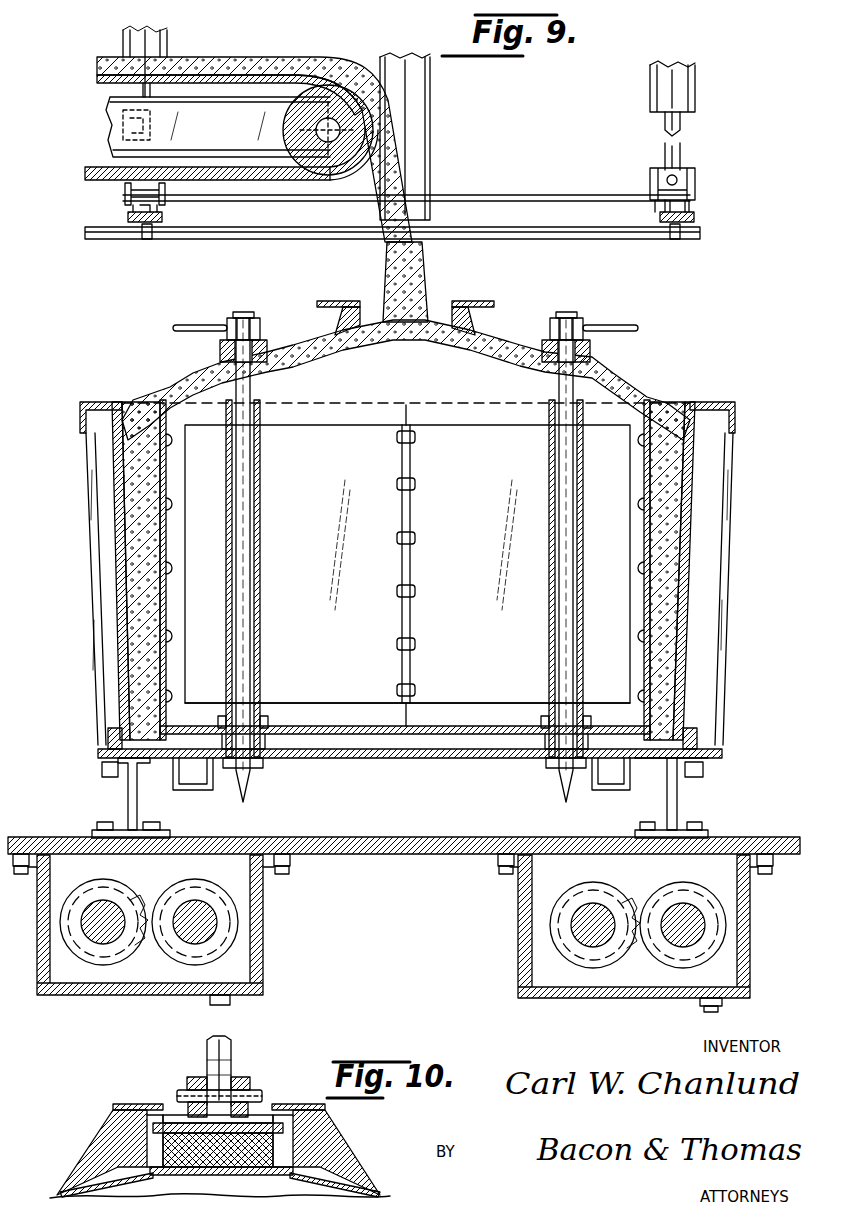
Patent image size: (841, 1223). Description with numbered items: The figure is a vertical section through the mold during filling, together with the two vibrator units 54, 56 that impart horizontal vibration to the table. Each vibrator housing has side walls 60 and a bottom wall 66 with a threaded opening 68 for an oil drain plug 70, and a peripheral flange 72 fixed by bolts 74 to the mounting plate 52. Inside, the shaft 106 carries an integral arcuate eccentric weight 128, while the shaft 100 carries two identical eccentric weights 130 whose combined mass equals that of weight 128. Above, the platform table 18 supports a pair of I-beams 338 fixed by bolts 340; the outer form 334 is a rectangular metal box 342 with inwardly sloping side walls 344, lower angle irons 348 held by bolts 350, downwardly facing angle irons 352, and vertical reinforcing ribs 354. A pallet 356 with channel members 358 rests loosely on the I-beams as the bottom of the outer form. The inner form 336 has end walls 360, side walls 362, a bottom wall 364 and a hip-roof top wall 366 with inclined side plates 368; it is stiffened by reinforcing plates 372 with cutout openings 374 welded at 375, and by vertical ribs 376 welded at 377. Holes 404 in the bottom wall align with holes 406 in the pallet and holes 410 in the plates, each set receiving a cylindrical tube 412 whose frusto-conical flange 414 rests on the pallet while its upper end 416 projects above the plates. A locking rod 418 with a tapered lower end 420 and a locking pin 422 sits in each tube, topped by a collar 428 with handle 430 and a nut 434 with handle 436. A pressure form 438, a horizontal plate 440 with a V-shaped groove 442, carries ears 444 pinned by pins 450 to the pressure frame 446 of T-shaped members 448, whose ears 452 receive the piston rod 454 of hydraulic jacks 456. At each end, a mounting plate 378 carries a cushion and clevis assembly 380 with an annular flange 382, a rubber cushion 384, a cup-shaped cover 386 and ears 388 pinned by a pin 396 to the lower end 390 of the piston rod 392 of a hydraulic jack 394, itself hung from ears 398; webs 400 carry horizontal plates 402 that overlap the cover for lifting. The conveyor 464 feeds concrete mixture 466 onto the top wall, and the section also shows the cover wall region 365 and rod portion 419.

In FIG. 9, the platform table 18 is at (370, 834).
In FIG. 9, the mounting plate 52 is at (420, 858).
In FIG. 9, the vibrator unit 54 is at (280, 944).
In FIG. 9, the vibrator unit 56 is at (506, 946).
In FIG. 9, the side walls 60 is at (520, 962).
In FIG. 9, the bottom wall 66 is at (578, 998).
In FIG. 9, the threaded opening 68 is at (698, 986).
In FIG. 9, the oil drain plug 70 is at (718, 1010).
In FIG. 9, the peripheral flange 72 is at (492, 864).
In FIG. 9, the bolts 74 is at (506, 872).
In FIG. 9, the shaft 100 is at (580, 942).
In FIG. 9, the shaft 106 is at (664, 947).
In FIG. 9, the eccentric weight 128 is at (700, 895).
In FIG. 9, the eccentric weights 130 is at (614, 895).
In FIG. 9, the outer form 334 is at (745, 610).
In FIG. 9, the inner form 336 is at (179, 369).
In FIG. 9, the I-beams 338 is at (140, 802).
In FIG. 9, the bolts 340 is at (106, 826).
In FIG. 9, the rectangular metal box 342 is at (705, 482).
In FIG. 9, the side walls 344 is at (120, 600).
In FIG. 9, the angle irons 348 is at (118, 729).
In FIG. 9, the bolts 350 is at (704, 772).
In FIG. 9, the downwardly facing angle irons 352 is at (735, 414).
In FIG. 9, the reinforcing ribs 354 is at (710, 580).
In FIG. 9, the pallet 356 is at (326, 760).
In FIG. 9, the reinforcing channel members 358 is at (216, 792).
In FIG. 9, the end walls 360 is at (478, 440).
In FIG. 9, the side walls 362 is at (168, 505).
In FIG. 9, the bottom wall 364 is at (448, 726).
In FIG. 9, the cover wall 365 is at (615, 380).
In FIG. 10, the top wall 366 is at (388, 1183).
In FIG. 9, the inclined side plates 368 is at (305, 368).
In FIG. 10, the inclined side plates 368 is at (60, 1196).
In FIG. 9, the reinforcing plates 372 is at (356, 425).
In FIG. 9, the cutout openings 374 is at (305, 703).
In FIG. 9, the welds 375 is at (170, 440).
In FIG. 9, the vertical reinforcing ribs 376 is at (412, 505).
In FIG. 9, the welds 377 is at (414, 438).
In FIG. 10, the mounting plate 378 is at (238, 1176).
In FIG. 10, the resilient rubber cushion and lifting clevis assembly 380 is at (292, 1078).
In FIG. 10, the annular flange 382 is at (156, 1178).
In FIG. 10, the resilient rubber cushion 384 is at (220, 1155).
In FIG. 10, the cup-shaped cover 386 is at (172, 1110).
In FIG. 10, the ears 388 is at (197, 1078).
In FIG. 10, the lower end 390 is at (218, 1150).
In FIG. 10, the piston rod 392 is at (233, 1050).
In FIG. 9, the hydraulic jack 394 is at (432, 122).
In FIG. 10, the pin 396 is at (264, 1094).
In FIG. 10, the ears 398 is at (244, 1078).
In FIG. 9, the webs 400 is at (318, 330).
In FIG. 10, the webs 400 is at (106, 1134).
In FIG. 9, the horizontal plates 402 is at (338, 300).
In FIG. 10, the horizontal plates 402 is at (128, 1104).
In FIG. 9, the holes 404 is at (222, 724).
In FIG. 9, the hole 406 is at (252, 774).
In FIG. 9, the holes 410 is at (236, 402).
In FIG. 9, the cylindrical tube 412 is at (258, 546).
In FIG. 9, the frusto-conical flange 414 is at (262, 741).
In FIG. 9, the upper end 416 is at (548, 364).
In FIG. 9, the locking rod 418 is at (252, 492).
In FIG. 9, the rod 419 is at (574, 492).
In FIG. 9, the lower end 420 is at (250, 796).
In FIG. 9, the locking pin 422 is at (262, 762).
In FIG. 9, the collar 428 is at (256, 344).
In FIG. 9, the handle 430 is at (228, 362).
In FIG. 9, the nut 434 is at (250, 315).
In FIG. 9, the handle 436 is at (192, 322).
In FIG. 9, the pressure form 438 is at (268, 251).
In FIG. 9, the horizontal plate 440 is at (132, 238).
In FIG. 9, the V-shaped groove 442 is at (147, 241).
In FIG. 9, the ears 444 is at (162, 212).
In FIG. 9, the pressure frame 446 is at (562, 191).
In FIG. 9, the T-shaped members 448 is at (500, 195).
In FIG. 9, the pins 450 is at (125, 218).
In FIG. 9, the ears 452 is at (125, 190).
In FIG. 9, the piston rod 454 is at (682, 164).
In FIG. 9, the hydraulic jacks 456 is at (168, 54).
In FIG. 9, the conveyor 464 is at (103, 133).
In FIG. 9, the concrete mixture 466 is at (430, 262).